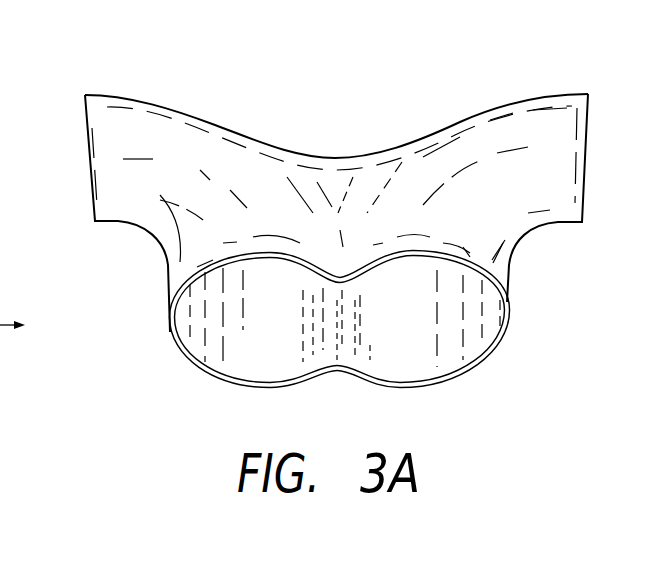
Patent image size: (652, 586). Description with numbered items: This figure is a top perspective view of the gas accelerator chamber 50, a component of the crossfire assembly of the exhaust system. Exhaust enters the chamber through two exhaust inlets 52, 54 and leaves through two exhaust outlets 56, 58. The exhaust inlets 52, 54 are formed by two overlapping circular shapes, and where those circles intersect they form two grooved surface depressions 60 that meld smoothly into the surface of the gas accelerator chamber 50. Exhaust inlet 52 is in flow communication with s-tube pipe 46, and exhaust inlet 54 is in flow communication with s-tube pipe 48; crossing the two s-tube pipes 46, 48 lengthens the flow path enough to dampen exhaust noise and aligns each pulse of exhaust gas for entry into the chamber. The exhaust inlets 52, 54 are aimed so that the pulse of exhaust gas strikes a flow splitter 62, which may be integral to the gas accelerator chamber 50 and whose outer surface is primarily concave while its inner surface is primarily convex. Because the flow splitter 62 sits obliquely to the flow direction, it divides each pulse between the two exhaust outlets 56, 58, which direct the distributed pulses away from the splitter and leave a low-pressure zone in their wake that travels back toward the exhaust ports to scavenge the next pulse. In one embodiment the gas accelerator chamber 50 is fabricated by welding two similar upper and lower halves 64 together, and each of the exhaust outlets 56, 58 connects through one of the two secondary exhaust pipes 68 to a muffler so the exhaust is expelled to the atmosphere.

The s-tube pipe 46 is at (413, 340).
The s-tube pipe 48 is at (267, 340).
The gas accelerator chamber 50 is at (145, 261).
The exhaust inlet 52 is at (496, 353).
The exhaust inlet 54 is at (170, 332).
The exhaust outlet 56 is at (588, 120).
The exhaust outlet 58 is at (85, 128).
The grooved surface depression 60 is at (334, 193).
The flow splitter 62 is at (331, 157).
The upper and lower halves 64 is at (482, 157).
The secondary exhaust pipe 68 is at (78, 172).